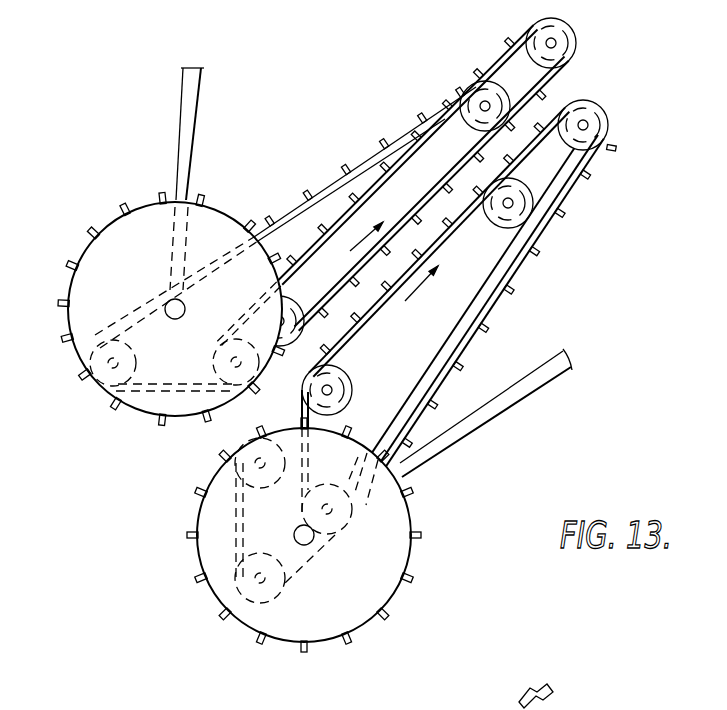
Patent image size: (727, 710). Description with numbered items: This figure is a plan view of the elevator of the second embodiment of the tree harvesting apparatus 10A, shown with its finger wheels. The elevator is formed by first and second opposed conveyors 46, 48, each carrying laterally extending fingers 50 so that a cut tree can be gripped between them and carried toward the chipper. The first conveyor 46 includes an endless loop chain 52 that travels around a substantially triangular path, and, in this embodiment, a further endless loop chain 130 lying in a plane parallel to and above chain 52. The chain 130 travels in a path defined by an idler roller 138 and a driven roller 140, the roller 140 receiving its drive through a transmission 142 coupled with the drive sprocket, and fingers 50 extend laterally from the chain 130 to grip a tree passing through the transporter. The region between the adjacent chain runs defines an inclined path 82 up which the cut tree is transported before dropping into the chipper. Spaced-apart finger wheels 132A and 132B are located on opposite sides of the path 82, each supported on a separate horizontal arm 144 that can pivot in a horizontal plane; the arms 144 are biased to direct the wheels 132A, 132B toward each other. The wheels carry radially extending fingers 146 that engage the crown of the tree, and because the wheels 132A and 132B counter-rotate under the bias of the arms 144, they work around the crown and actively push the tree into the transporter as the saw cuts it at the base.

The tree harvesting apparatus (second embodiment) 10A is at (160, 477).
The first conveyor 46 is at (128, 420).
The second conveyor 48 is at (175, 570).
The fingers 50 is at (330, 222).
The endless loop chain 52 is at (345, 173).
The inclined path 82 is at (358, 297).
The endless loop chain 130 is at (390, 146).
The finger wheel 132A is at (120, 248).
The finger wheel 132B is at (330, 597).
The idler roller 138 is at (283, 322).
The driven roller 140 is at (578, 41).
The transmission 142 is at (480, 100).
The horizontal arm 144 is at (187, 123).
The radially extending fingers 146 is at (63, 342).